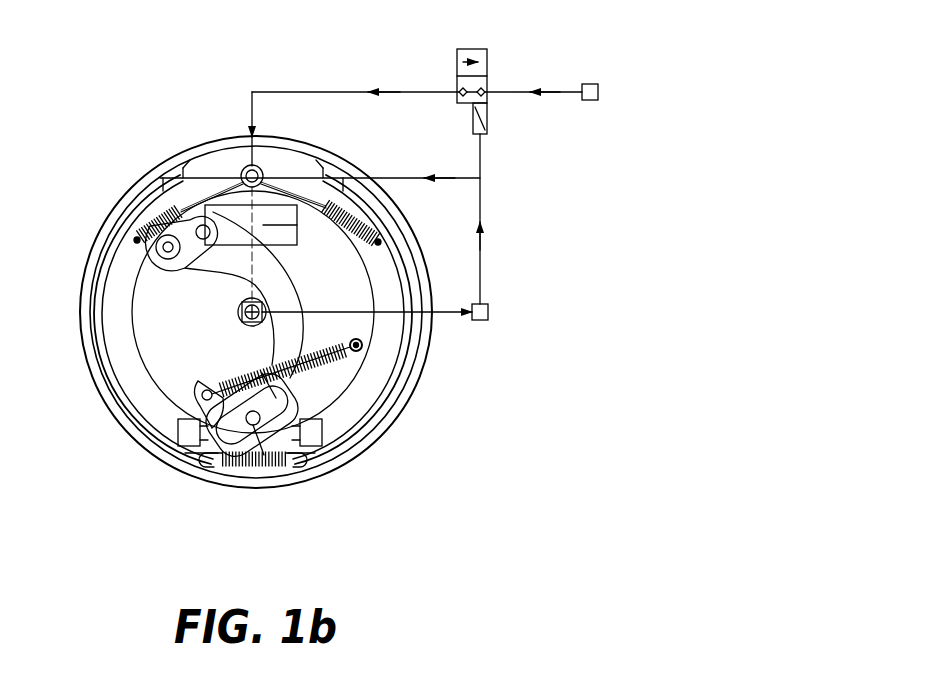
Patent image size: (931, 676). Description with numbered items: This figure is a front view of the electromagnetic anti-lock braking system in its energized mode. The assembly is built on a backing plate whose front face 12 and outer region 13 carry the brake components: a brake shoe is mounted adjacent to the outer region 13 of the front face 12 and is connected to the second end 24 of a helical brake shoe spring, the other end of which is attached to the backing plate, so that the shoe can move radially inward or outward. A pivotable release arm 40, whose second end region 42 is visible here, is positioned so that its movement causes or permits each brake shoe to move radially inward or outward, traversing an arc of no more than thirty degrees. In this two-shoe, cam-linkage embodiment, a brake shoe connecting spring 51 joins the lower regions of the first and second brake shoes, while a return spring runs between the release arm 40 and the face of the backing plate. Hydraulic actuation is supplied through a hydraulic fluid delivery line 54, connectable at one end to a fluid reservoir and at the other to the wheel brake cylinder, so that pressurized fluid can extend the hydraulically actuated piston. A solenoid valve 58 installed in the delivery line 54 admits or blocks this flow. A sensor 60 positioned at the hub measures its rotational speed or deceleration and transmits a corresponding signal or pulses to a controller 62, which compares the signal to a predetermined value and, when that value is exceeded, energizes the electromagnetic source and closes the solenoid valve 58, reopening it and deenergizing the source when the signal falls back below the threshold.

The front face 12 is at (348, 295).
The outer region 13 is at (244, 170).
The second end 24 is at (150, 243).
The pivotable release arm 40 is at (240, 273).
The second end region 42 is at (258, 432).
The brake shoe connecting spring 51 is at (238, 467).
The hydraulic fluid delivery line 54 is at (346, 92).
The solenoid valve 58 is at (487, 70).
The sensor 60 is at (246, 326).
The controller 62 is at (490, 308).